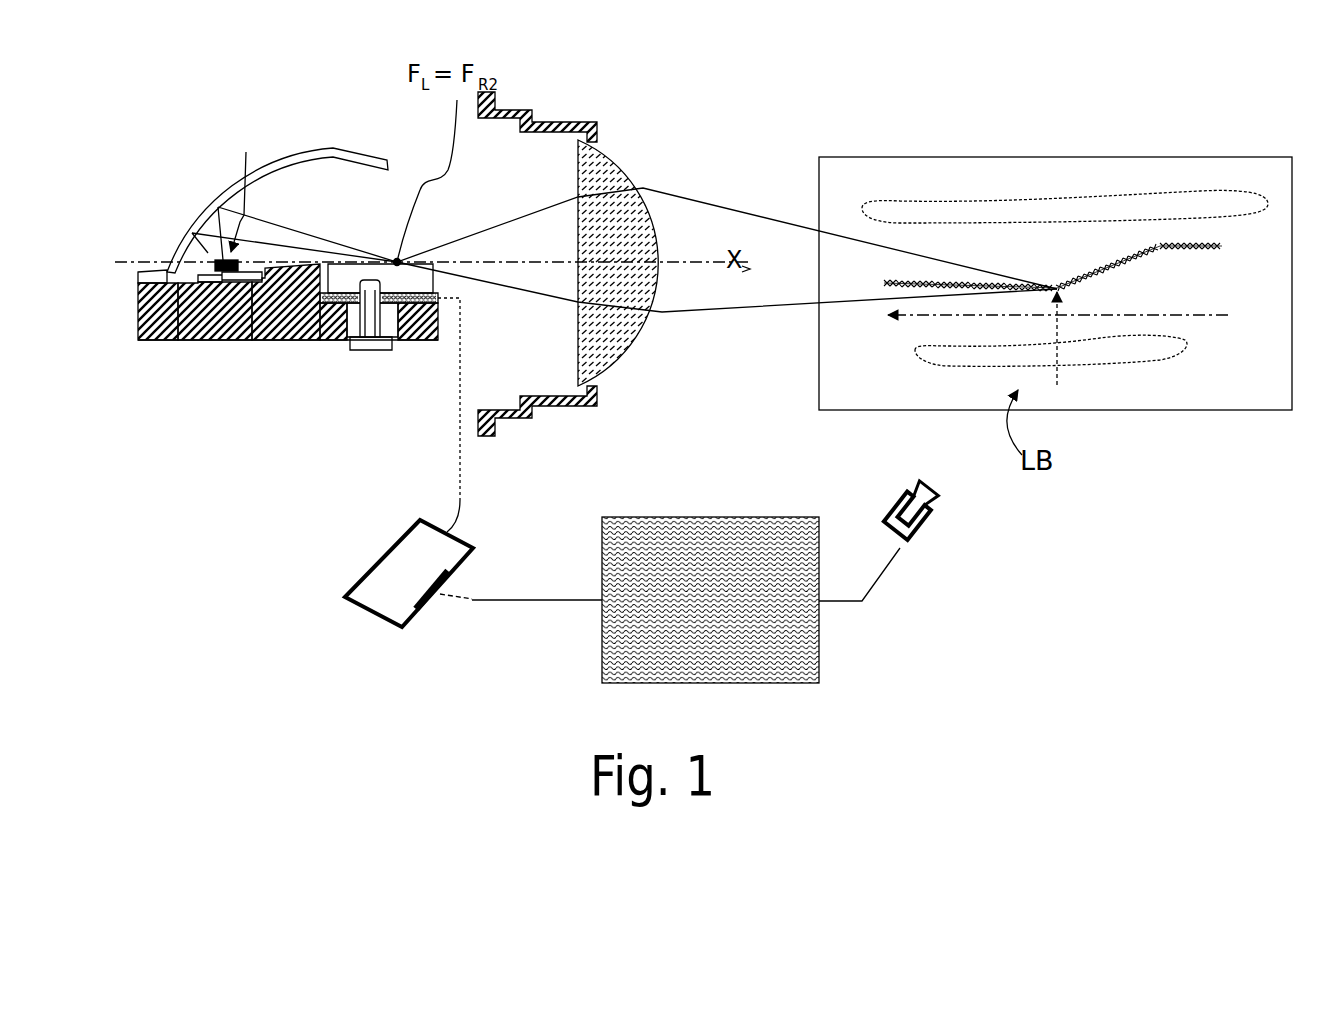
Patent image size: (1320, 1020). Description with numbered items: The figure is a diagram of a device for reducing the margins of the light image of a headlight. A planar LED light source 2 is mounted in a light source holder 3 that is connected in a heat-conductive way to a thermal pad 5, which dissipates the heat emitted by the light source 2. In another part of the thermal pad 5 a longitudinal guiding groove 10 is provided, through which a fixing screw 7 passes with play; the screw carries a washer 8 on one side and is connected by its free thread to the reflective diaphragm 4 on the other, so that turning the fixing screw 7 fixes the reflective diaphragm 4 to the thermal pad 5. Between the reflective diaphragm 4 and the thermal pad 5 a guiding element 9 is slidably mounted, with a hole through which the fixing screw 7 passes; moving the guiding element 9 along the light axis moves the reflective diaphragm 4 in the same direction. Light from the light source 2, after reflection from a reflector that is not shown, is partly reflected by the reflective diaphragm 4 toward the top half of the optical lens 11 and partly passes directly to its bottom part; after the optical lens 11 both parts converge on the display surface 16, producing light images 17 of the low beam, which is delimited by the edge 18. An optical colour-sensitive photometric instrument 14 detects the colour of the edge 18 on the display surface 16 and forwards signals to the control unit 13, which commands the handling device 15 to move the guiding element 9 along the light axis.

The planar LED light source 2 is at (222, 340).
The light source holder 3 is at (250, 340).
The reflective diaphragm 4 is at (308, 340).
The thermal pad 5 is at (183, 340).
The fixing screw 7 is at (368, 345).
The washer 8 is at (390, 350).
The guiding element 9 is at (430, 300).
The longitudinal guiding groove 10 is at (398, 318).
The optical lens 11 is at (612, 160).
The control unit 13 is at (783, 627).
The optical colour-sensitive photometric instrument 14 is at (915, 543).
The handling device 15 is at (437, 597).
The display surface 16 is at (965, 173).
The light images 17 is at (1190, 212).
The edge of the light image 18 is at (1213, 249).